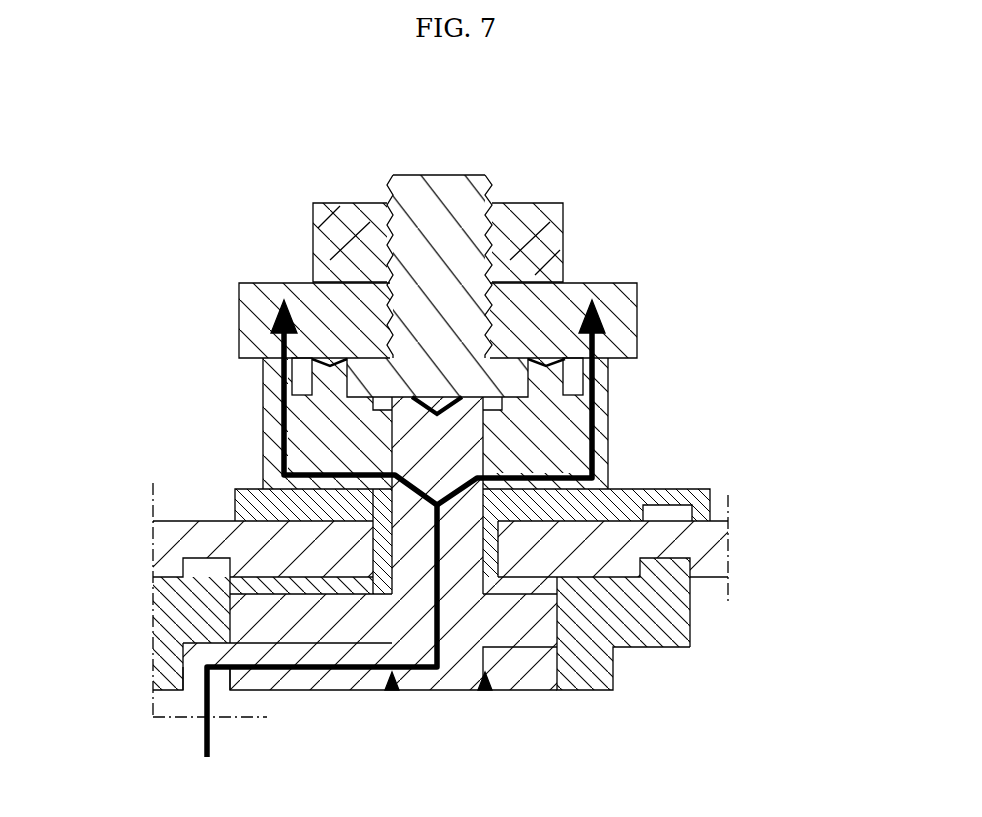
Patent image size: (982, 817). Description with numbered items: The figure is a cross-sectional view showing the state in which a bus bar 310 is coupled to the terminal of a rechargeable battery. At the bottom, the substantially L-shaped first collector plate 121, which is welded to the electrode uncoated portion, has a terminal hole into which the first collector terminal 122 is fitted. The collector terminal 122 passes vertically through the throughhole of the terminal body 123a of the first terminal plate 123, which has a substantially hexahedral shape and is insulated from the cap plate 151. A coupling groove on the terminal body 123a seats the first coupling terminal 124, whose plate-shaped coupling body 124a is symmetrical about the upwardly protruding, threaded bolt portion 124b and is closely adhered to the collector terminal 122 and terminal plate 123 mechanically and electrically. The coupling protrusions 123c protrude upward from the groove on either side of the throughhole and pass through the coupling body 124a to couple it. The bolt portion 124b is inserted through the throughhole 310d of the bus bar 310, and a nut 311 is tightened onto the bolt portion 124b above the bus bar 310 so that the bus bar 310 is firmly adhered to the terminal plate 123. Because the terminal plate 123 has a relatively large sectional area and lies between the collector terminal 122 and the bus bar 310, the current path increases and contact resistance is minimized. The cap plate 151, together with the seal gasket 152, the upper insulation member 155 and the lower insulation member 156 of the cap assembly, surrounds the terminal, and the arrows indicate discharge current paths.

The first collector plate 121 is at (155, 708).
The first collector terminal 122 is at (450, 672).
The first terminal plate 123 is at (557, 367).
The terminal body 123a is at (603, 425).
The coupling protrusion 123c is at (600, 292).
The first coupling terminal 124 is at (412, 250).
The coupling body 124a is at (368, 372).
The bolt portion 124b is at (403, 235).
The cap plate 151 is at (165, 542).
The seal gasket 152 is at (620, 652).
The upper insulation member 155 is at (700, 490).
The lower insulation member 156 is at (677, 622).
The bus bar 310 is at (547, 373).
The throughhole 310d is at (484, 300).
The nut 311 is at (533, 210).